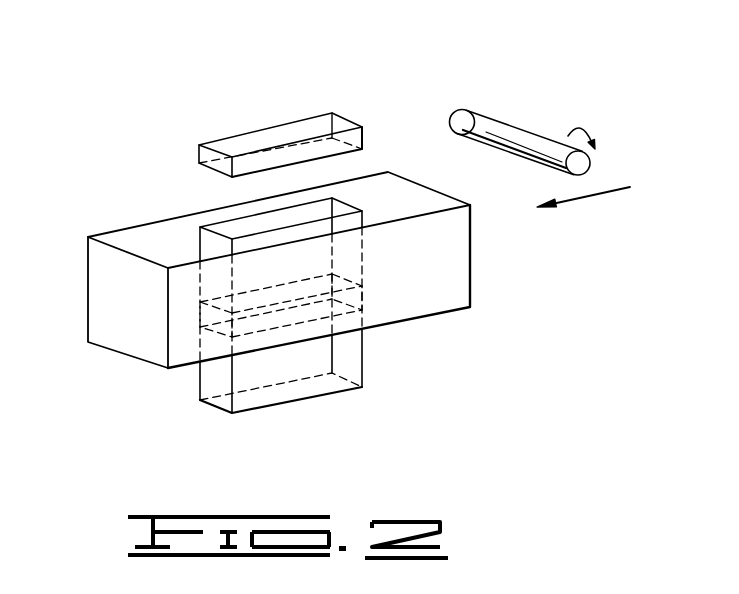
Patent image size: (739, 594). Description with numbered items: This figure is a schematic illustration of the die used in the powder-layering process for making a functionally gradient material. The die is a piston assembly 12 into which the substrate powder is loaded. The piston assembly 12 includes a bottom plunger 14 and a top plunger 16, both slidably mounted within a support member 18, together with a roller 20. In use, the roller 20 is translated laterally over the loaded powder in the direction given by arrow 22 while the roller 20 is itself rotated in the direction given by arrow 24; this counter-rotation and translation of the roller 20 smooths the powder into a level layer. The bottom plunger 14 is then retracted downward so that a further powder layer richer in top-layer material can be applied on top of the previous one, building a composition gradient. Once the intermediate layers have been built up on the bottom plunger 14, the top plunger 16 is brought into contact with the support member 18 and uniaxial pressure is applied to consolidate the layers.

The piston assembly 12 is at (88, 278).
The bottom plunger 14 is at (287, 403).
The top plunger 16 is at (273, 133).
The support member 18 is at (430, 292).
The roller 20 is at (487, 128).
The arrow indicating direction of roller translation 22 is at (582, 198).
The arrow indicating direction of roller rotation 24 is at (582, 127).